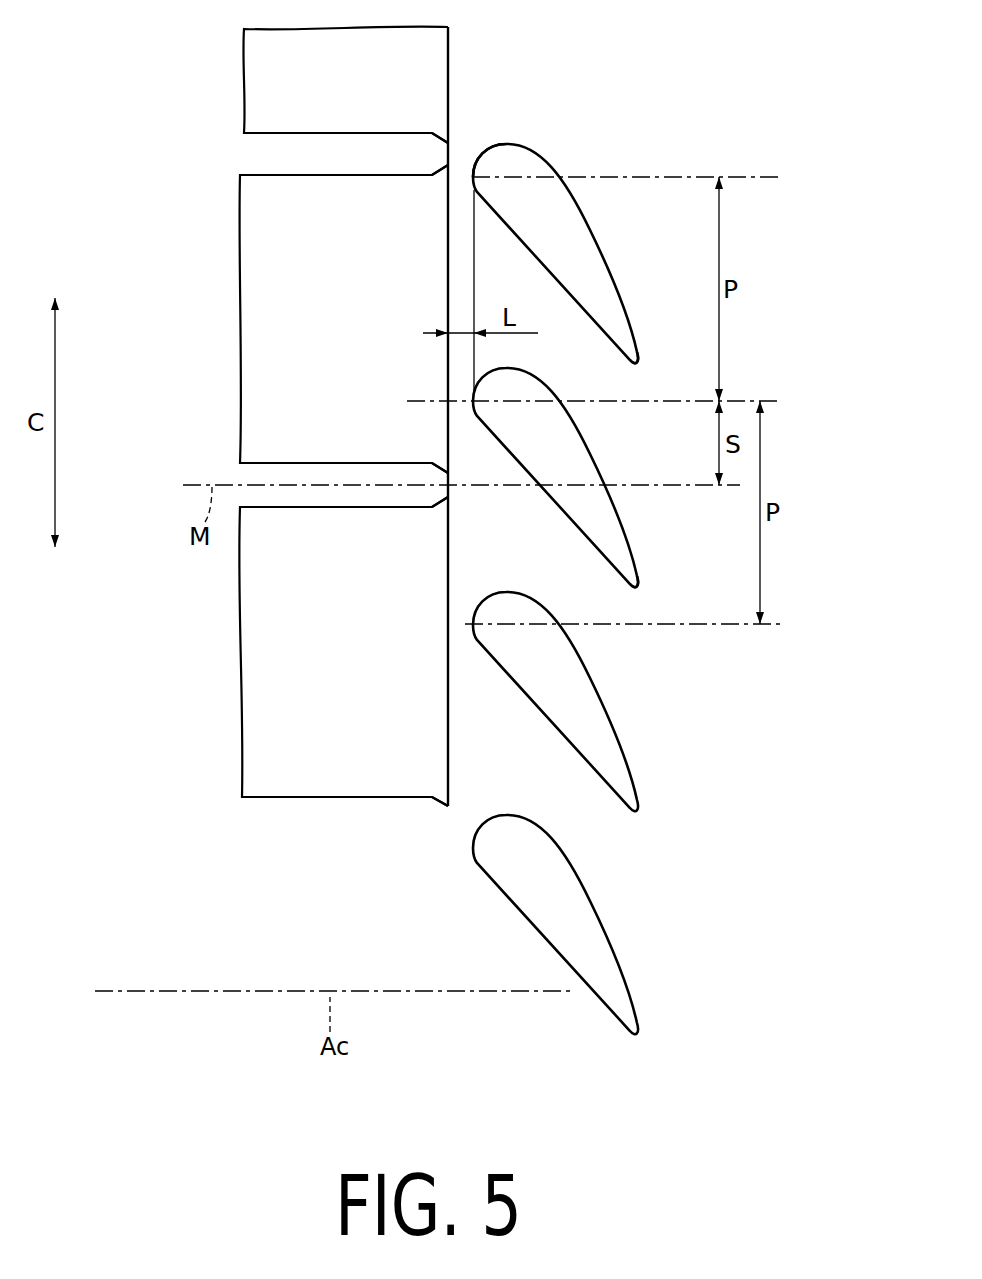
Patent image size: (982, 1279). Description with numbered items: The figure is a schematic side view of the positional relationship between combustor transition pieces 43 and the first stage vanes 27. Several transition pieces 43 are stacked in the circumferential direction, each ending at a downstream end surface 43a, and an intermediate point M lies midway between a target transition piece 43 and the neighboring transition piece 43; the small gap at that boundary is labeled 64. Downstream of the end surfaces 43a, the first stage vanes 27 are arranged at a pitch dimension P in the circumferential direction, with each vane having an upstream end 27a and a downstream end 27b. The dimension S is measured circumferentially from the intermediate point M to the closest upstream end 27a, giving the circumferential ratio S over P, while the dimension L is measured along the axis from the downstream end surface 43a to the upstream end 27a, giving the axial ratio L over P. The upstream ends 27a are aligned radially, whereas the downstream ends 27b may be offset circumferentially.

The first stage vane 27 is at (557, 163).
The upstream end 27a is at (472, 170).
The downstream end 27b is at (637, 361).
The transition piece 43 is at (243, 58).
The downstream end surface 43a is at (450, 257).
The gap 64 is at (452, 163).